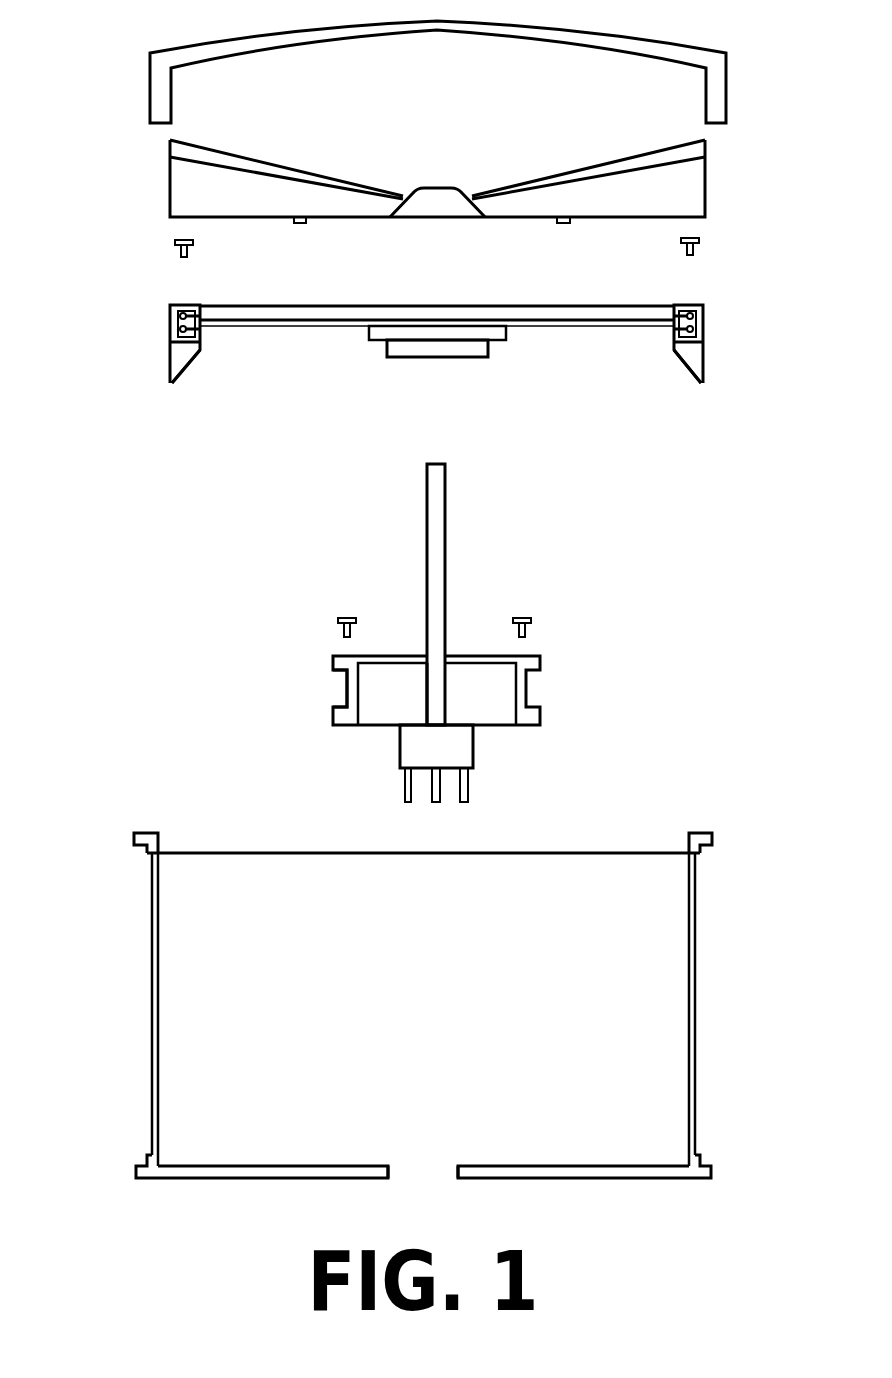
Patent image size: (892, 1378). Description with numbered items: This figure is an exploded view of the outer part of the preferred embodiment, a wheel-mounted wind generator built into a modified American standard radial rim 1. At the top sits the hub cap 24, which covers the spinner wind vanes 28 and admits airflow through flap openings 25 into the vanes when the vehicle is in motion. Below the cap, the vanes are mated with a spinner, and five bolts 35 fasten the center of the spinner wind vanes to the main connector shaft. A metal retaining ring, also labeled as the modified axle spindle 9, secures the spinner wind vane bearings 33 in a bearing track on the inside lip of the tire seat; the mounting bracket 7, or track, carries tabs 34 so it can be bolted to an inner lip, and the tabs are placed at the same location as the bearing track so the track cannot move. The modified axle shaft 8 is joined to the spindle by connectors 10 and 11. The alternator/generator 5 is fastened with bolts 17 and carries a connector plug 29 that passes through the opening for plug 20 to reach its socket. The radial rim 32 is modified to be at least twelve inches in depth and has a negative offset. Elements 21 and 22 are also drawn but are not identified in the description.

The modified American standard radial rim 1 is at (152, 1030).
The alternator/generator 5 is at (540, 656).
The mounting bracket 7 is at (170, 320).
The modified axle shaft 8 is at (445, 568).
The modified axle spindle 9 is at (327, 327).
The connector 10 is at (506, 337).
The connector 11 is at (488, 355).
The bolt 17 is at (338, 621).
The opening for plug 20 is at (420, 1160).
The rod insertion portion 21 is at (427, 680).
The lens dome 22 is at (437, 188).
The hub cap 24 is at (330, 28).
The flap opening 25 is at (347, 692).
The spinner wind vane 28 is at (535, 178).
The connector plug 29 is at (473, 759).
The radial rim 32 is at (134, 838).
The bearing 33 is at (195, 313).
The tab 34 is at (188, 373).
The bolt 35 is at (165, 248).